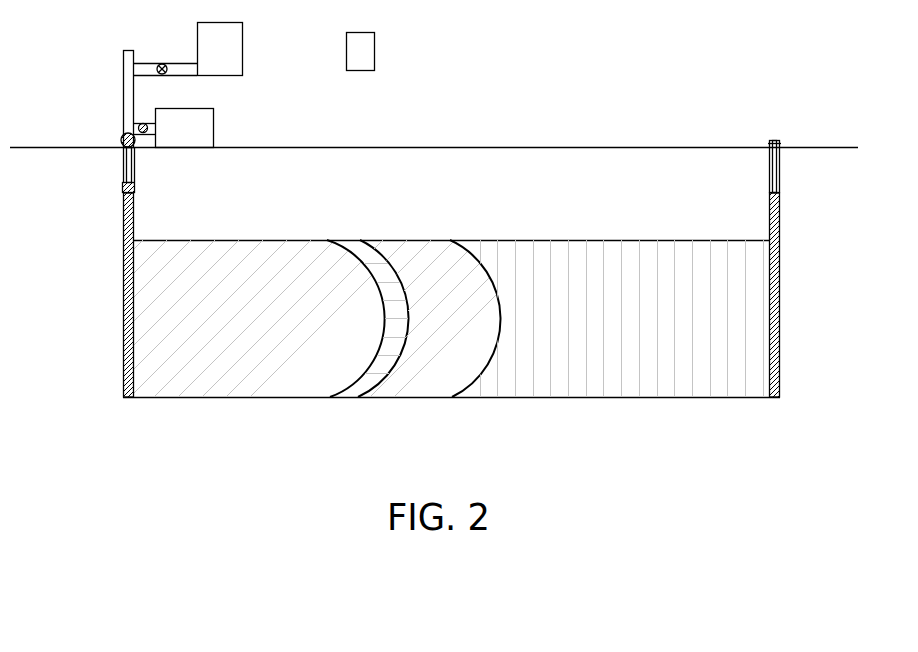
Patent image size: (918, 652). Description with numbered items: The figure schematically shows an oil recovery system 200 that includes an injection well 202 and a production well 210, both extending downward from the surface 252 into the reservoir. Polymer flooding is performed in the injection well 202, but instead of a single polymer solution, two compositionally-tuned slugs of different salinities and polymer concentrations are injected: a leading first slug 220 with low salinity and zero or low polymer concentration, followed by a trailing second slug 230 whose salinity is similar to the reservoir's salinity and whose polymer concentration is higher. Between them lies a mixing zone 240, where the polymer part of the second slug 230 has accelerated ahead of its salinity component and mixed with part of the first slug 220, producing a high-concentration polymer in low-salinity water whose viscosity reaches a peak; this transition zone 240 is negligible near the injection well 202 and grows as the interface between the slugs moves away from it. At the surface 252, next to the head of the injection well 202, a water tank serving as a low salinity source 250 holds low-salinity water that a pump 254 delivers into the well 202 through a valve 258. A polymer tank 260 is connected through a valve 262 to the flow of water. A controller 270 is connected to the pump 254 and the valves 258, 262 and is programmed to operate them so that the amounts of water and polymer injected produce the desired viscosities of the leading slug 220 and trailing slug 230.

The oil recovery system 200 is at (581, 105).
The injection well 202 is at (122, 213).
The production well 210 is at (781, 213).
The first slug 220 is at (413, 382).
The second slug 230 is at (262, 255).
The mixing zone 240 is at (363, 252).
The low salinity source 250 is at (213, 124).
The surface 252 is at (797, 146).
The pump 254 is at (121, 140).
The valve 258 is at (141, 123).
The polymer tank 260 is at (242, 48).
The valve 262 is at (162, 64).
The controller 270 is at (374, 50).